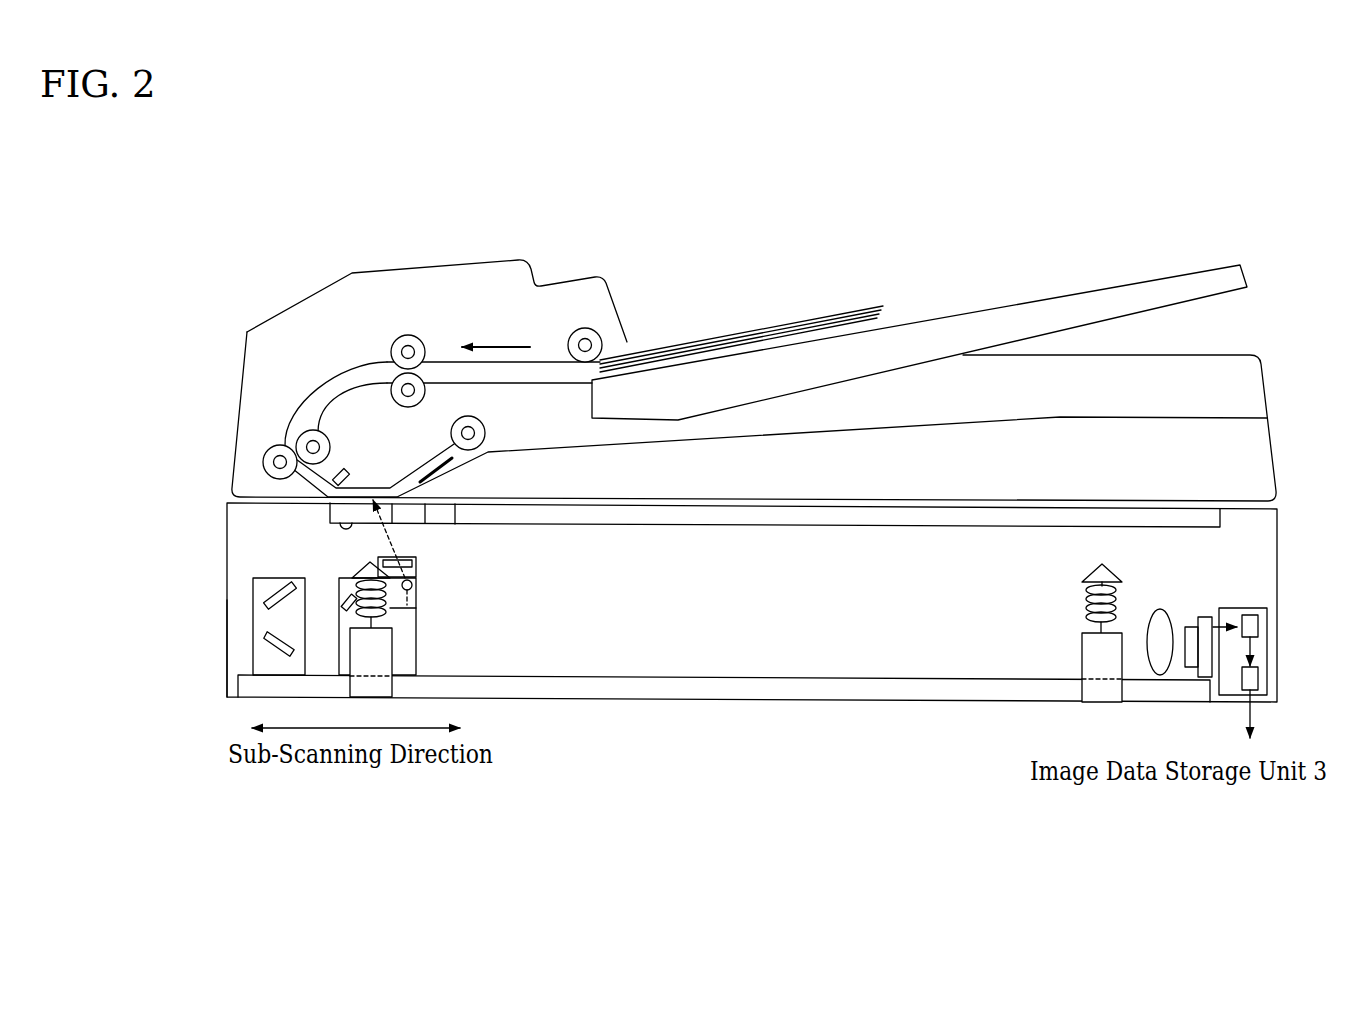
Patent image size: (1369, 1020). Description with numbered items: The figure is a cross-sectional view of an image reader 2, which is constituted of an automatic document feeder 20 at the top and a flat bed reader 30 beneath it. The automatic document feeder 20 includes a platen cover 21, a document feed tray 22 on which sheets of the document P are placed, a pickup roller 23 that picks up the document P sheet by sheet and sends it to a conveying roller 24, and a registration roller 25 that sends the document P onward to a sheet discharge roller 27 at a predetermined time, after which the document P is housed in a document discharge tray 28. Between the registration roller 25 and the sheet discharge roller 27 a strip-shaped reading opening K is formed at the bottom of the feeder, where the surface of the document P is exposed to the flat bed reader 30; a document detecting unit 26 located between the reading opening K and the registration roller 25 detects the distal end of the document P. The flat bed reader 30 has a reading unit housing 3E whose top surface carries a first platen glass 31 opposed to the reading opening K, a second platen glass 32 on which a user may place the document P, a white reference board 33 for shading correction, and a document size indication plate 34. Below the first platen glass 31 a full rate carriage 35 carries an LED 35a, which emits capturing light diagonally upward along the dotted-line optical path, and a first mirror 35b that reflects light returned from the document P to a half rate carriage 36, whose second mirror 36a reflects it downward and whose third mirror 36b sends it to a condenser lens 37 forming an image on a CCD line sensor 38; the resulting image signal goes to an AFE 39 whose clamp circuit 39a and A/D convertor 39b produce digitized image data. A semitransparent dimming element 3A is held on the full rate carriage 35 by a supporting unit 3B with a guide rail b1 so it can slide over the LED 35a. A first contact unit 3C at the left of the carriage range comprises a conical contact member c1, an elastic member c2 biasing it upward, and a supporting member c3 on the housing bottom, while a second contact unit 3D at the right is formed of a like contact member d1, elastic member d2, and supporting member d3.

The image reader 2 is at (768, 222).
The automatic document feeder (ADF) 20 is at (228, 347).
The platen cover 21 is at (480, 262).
The document feed tray 22 is at (1177, 272).
The pickup roller 23 is at (597, 330).
The conveying roller 24 is at (414, 337).
The registration roller 25 is at (275, 447).
The document detecting unit 26 is at (346, 470).
The sheet discharge roller 27 is at (487, 427).
The document discharge tray 28 is at (920, 423).
The document P is at (840, 322).
The flat bed reader 30 is at (198, 503).
The first platen glass 31 is at (345, 527).
The second platen glass 32 is at (787, 527).
The white reference board 33 is at (418, 495).
The document size indication plate 34 is at (450, 497).
The full rate carriage 35 is at (338, 585).
The LED 35a is at (410, 597).
The first mirror 35b is at (340, 593).
The half rate carriage 36 is at (262, 577).
The second mirror 36a is at (272, 600).
The third mirror 36b is at (267, 647).
The condenser lens 37 is at (1160, 610).
The CCD line sensor 38 is at (1205, 617).
The analog front end (AFE) 39 is at (1250, 608).
The clamp circuit 39a is at (1260, 627).
The A/D convertor 39b is at (1260, 680).
The dimming element 3A is at (414, 557).
The supporting unit 3B is at (416, 595).
The first contact unit 3C is at (358, 576).
The second contact unit 3D is at (1060, 580).
The reading unit housing 3E is at (227, 661).
The reading opening K is at (397, 508).
The guide rail b1 is at (412, 580).
The contact member c1 is at (357, 553).
The elastic member c2 is at (372, 623).
The supporting member c3 is at (350, 650).
The contact member d1 is at (1093, 568).
The elastic member d2 is at (1083, 605).
The supporting member d3 is at (1082, 663).